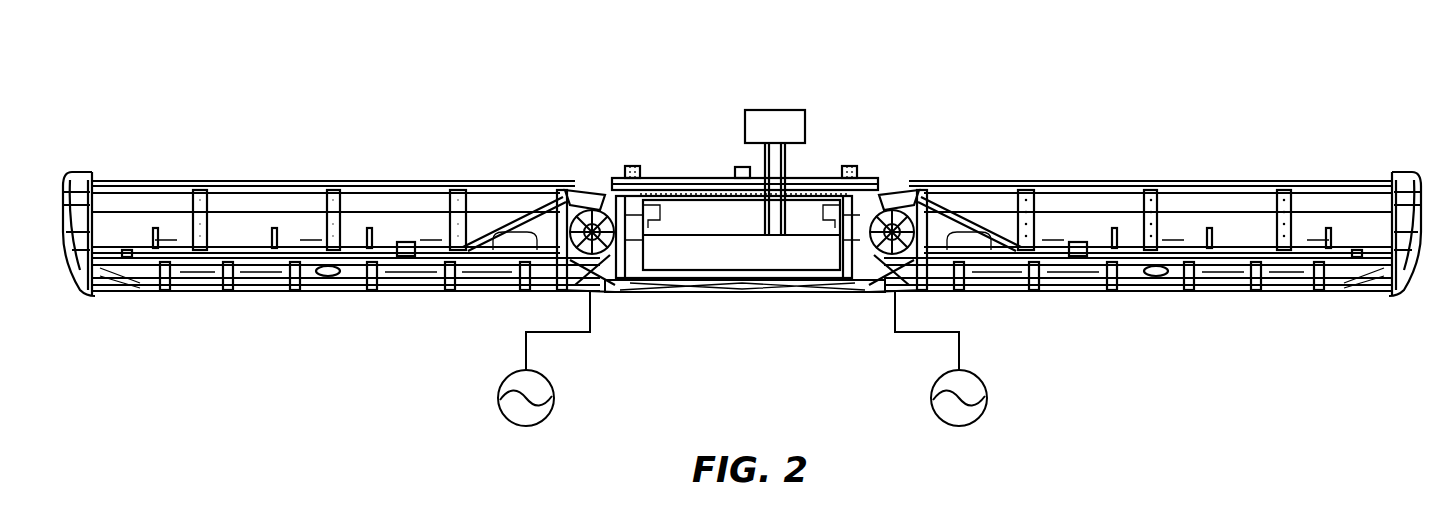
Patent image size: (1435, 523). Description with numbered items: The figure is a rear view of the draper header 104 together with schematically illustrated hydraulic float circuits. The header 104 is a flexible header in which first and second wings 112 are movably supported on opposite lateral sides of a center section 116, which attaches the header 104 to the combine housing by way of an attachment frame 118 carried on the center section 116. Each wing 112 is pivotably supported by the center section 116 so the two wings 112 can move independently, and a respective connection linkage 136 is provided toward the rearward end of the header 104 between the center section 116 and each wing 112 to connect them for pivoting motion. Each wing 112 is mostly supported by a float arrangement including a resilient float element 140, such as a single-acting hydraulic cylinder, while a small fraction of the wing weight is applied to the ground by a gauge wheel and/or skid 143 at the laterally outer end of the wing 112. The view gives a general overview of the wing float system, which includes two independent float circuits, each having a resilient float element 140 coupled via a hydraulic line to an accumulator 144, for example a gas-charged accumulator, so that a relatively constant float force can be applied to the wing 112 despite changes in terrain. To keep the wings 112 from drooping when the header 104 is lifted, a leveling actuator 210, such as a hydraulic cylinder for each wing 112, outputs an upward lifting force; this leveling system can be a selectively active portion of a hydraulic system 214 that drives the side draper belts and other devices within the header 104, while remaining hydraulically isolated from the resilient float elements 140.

The header 104 is at (742, 192).
The wing 112 is at (260, 187).
The center section 116 is at (704, 152).
The attachment frame 118 is at (713, 292).
The connection linkage 136 is at (583, 182).
The resilient float element 140 is at (547, 203).
The gauge wheel and/or skid 143 is at (83, 288).
The accumulator 144 is at (509, 428).
The leveling actuator 210 is at (592, 187).
The hydraulic system 214 is at (790, 104).